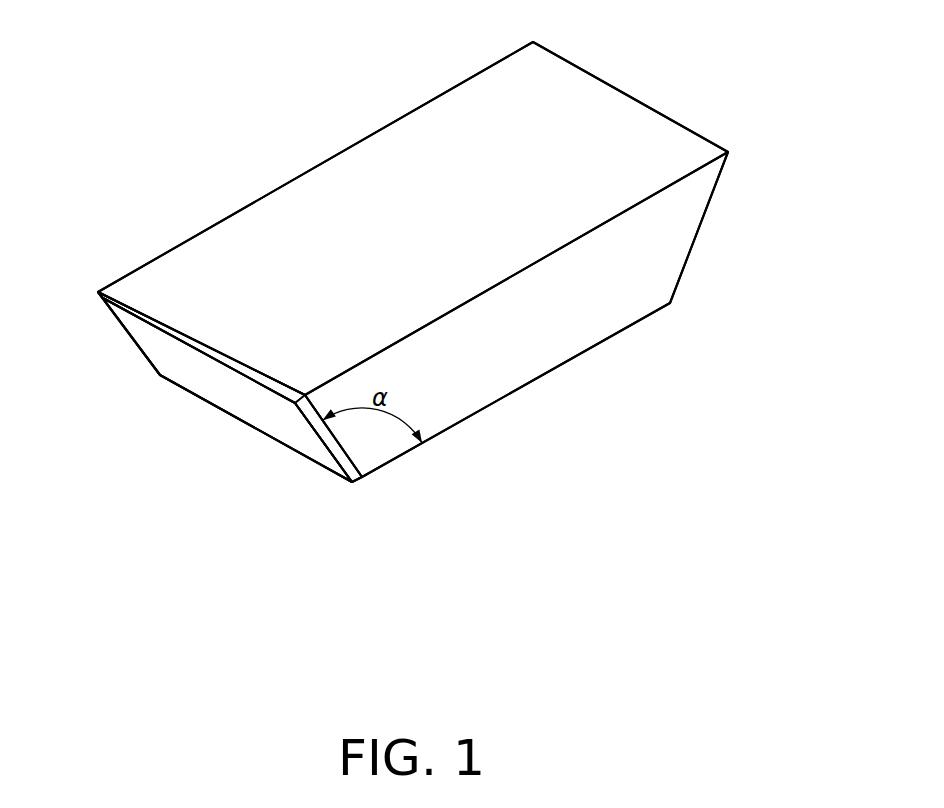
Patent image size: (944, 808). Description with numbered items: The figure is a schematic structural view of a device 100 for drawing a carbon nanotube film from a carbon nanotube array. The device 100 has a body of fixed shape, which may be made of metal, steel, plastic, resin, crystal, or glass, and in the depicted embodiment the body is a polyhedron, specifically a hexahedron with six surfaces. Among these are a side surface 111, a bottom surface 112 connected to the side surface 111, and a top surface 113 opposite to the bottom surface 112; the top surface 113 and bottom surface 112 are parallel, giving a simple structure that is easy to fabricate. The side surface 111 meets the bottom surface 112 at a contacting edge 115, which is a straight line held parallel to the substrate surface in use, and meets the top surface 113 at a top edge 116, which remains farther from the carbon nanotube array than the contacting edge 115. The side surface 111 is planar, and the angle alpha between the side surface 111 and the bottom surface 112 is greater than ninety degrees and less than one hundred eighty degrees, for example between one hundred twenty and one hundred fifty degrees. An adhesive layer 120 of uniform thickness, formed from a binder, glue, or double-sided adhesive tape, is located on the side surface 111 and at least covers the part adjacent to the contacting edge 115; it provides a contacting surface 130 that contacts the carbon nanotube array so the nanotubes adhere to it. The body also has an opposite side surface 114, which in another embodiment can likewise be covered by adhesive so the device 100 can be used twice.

The device 100 is at (336, 128).
The side surface 111 is at (349, 462).
The bottom surface 112 is at (573, 358).
The top surface 113 is at (573, 115).
The side surface 114 is at (706, 231).
The contacting edge 115 is at (178, 388).
The top edge 116 is at (158, 304).
The adhesive layer 120 is at (320, 427).
The contacting surface 130 is at (235, 402).